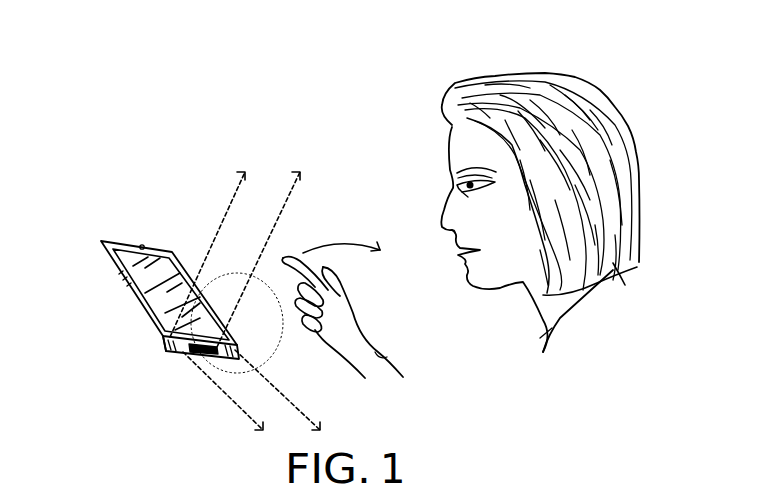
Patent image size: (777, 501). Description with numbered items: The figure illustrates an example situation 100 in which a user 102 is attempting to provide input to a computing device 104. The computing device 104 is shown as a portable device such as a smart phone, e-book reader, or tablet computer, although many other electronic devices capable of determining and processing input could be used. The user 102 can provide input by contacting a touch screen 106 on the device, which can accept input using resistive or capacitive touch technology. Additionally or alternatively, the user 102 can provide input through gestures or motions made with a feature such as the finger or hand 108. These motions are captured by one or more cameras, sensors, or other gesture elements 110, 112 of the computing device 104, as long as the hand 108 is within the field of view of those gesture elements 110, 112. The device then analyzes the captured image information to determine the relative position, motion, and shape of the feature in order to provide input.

The example situation 100 is at (691, 80).
The user 102 is at (403, 127).
The computing device 104 is at (113, 275).
The touch screen 106 is at (130, 244).
The hand 108 is at (387, 357).
The gesture element 110 is at (160, 340).
The gesture element 112 is at (212, 355).